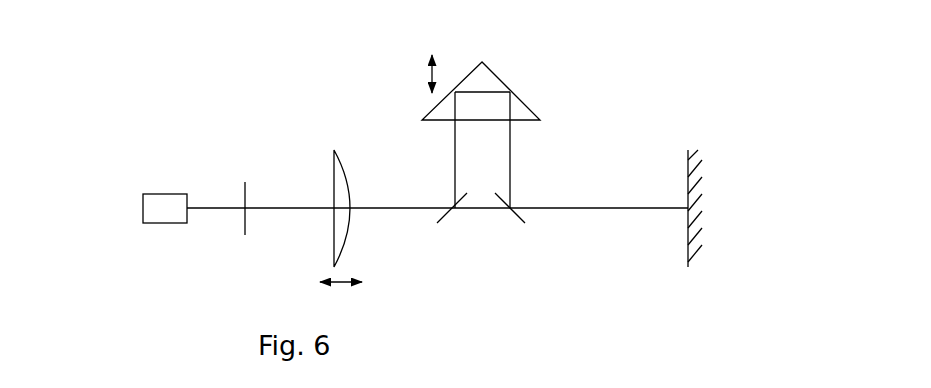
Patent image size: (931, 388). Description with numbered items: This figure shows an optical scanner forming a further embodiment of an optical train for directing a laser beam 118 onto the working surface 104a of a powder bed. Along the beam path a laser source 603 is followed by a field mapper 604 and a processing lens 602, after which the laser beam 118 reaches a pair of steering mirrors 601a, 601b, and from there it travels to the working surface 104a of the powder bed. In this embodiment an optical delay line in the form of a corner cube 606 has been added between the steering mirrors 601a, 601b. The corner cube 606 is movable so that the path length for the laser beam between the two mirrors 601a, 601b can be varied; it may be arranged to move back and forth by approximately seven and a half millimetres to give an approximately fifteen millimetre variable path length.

The laser source 603 is at (145, 223).
The field mapper 604 is at (245, 183).
The processing lens 602 is at (325, 178).
The corner cube 606 is at (477, 62).
The steering mirror 601a is at (437, 232).
The steering mirror 601b is at (517, 207).
The laser beam 118 is at (622, 209).
The working surface 104a is at (683, 177).